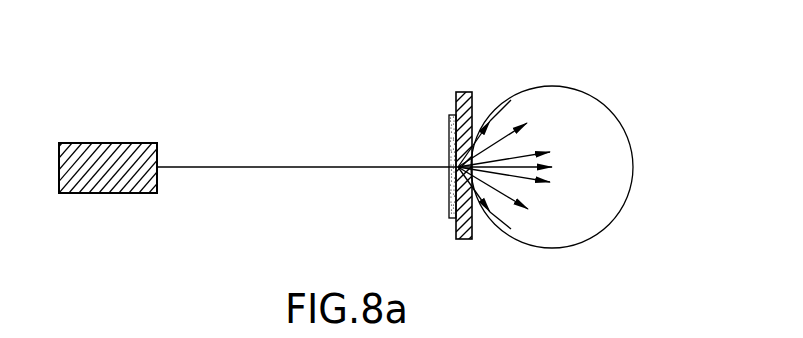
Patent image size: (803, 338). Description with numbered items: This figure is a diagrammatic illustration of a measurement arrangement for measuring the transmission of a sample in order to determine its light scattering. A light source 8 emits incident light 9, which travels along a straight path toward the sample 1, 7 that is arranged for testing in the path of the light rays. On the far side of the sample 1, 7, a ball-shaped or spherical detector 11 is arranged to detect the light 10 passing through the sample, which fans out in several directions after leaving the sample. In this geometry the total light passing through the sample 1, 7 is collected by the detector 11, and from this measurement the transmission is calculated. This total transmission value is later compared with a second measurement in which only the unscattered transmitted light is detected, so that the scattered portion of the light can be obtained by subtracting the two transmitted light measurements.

The light source 8 is at (108, 193).
The incident light 9 is at (316, 167).
The sample 1 is at (462, 92).
The sample 7 is at (449, 137).
The ball-shaped detector 11 is at (600, 103).
The light passing through the sample 10 is at (505, 199).